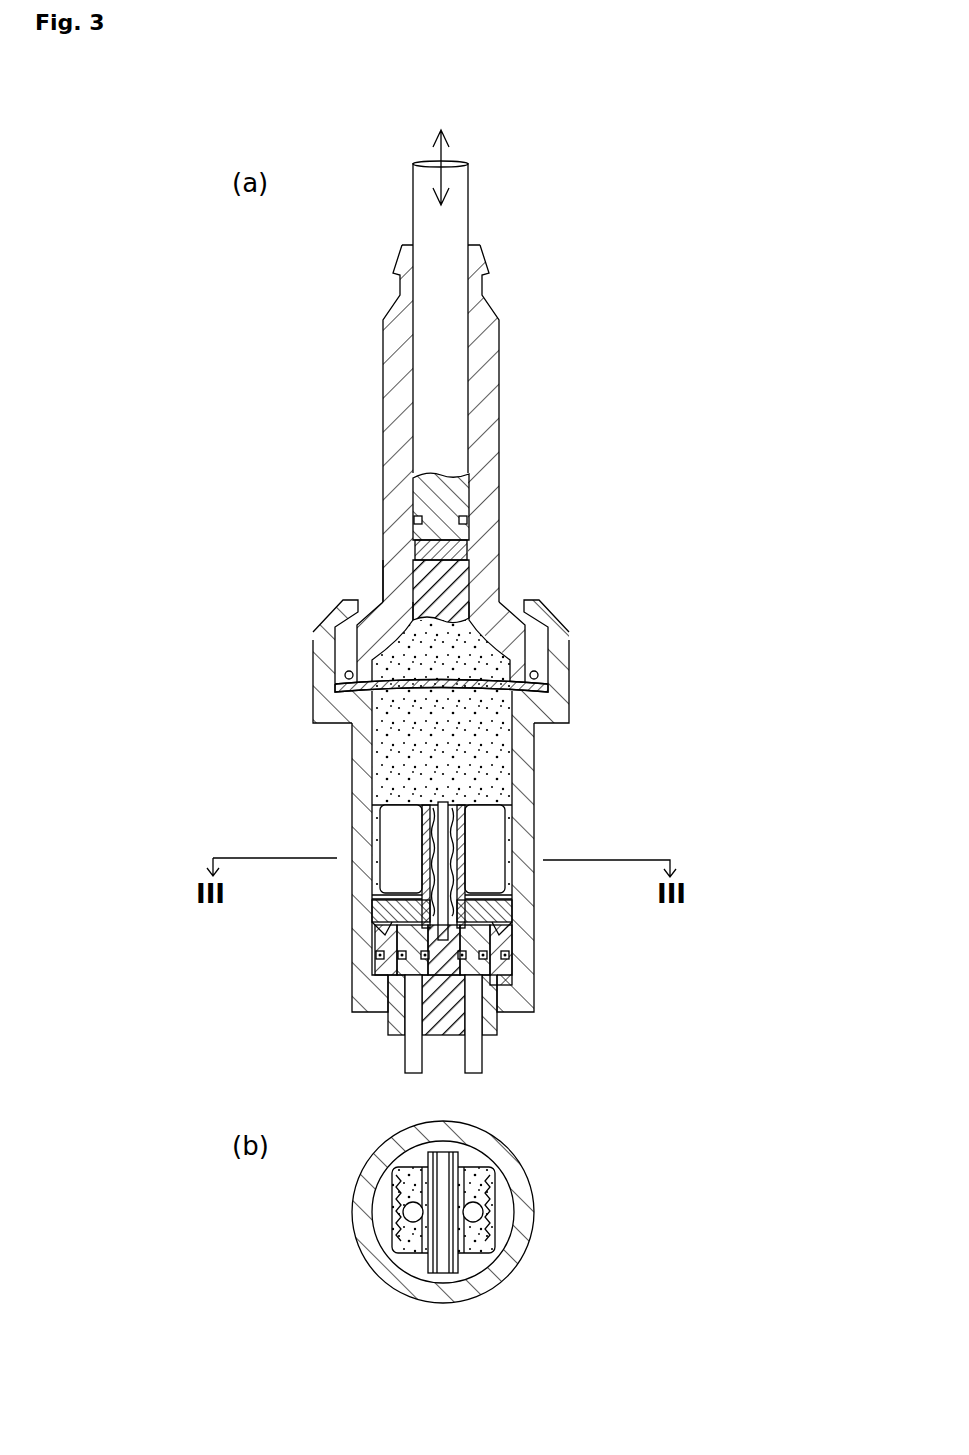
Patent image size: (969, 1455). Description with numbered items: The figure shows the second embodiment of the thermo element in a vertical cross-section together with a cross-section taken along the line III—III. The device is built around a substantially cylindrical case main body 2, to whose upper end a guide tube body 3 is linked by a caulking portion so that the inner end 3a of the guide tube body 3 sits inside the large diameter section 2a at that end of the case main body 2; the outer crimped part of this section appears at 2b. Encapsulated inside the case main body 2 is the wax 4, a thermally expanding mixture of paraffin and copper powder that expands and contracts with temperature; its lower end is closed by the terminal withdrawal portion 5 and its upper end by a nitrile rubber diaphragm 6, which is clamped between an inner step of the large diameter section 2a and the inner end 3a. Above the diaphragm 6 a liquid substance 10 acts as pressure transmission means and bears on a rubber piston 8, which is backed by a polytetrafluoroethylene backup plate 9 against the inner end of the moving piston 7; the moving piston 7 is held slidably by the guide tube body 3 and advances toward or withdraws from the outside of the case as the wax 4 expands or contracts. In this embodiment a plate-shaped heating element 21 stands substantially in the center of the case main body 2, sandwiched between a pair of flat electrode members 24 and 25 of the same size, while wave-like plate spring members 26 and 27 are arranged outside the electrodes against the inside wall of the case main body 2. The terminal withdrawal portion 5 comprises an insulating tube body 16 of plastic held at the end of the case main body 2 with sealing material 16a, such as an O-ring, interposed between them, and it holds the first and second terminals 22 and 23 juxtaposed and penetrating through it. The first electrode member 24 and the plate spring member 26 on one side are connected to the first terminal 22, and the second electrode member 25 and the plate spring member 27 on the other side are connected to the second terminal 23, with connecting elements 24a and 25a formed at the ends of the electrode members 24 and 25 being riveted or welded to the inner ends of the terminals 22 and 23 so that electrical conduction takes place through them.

The case main body 2 is at (533, 800).
The large diameter section 2a is at (571, 688).
The housing cap portion 2b is at (550, 620).
The guide tube body 3 is at (505, 419).
The inner end of guide tube body 3a is at (545, 641).
The wax 4 is at (388, 733).
The terminal withdrawal portion 5 is at (361, 953).
The diaphragm 6 is at (345, 653).
The moving piston 7 is at (457, 362).
The rubber piston 8 is at (463, 592).
The backup plate 9 is at (467, 552).
The liquid substance 10 is at (380, 592).
The insulating tube body 16 is at (490, 988).
The sealing material 16a is at (505, 956).
The heating element 21 is at (447, 800).
The first terminal 22 is at (474, 1052).
The second terminal 23 is at (413, 1052).
The first electrode member 24 is at (465, 822).
The second electrode member 25 is at (425, 817).
The connecting element 24a is at (500, 922).
The connecting element 25a is at (378, 927).
The second plate spring member 26 is at (505, 848).
The first plate spring member 27 is at (398, 848).